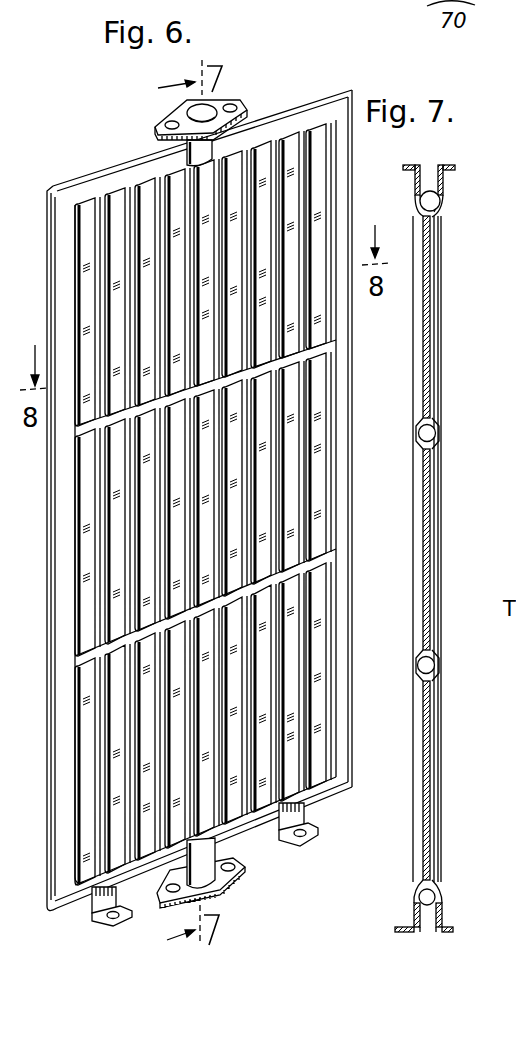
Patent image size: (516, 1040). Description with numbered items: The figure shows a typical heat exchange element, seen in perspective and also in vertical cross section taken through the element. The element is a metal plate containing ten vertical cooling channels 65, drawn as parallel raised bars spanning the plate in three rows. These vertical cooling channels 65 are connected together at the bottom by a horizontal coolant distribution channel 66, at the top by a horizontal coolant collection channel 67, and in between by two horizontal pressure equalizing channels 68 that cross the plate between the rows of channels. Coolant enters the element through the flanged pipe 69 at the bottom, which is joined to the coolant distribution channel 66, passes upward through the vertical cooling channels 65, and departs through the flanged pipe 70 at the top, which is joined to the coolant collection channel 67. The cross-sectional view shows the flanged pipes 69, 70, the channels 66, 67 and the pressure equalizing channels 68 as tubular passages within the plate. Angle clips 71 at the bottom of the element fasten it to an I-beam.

In FIG. 6, the vertical cooling channels 65 is at (132, 512).
In FIG. 6, the horizontal coolant distribution channel 66 is at (253, 813).
In FIG. 7, the horizontal coolant distribution channel 66 is at (434, 896).
In FIG. 6, the horizontal coolant collection channel 67 is at (113, 193).
In FIG. 7, the horizontal coolant collection channel 67 is at (436, 203).
In FIG. 6, the horizontal pressure equalizing channels 68 is at (80, 428).
In FIG. 7, the horizontal pressure equalizing channels 68 is at (434, 430).
In FIG. 6, the flanged pipe 69 is at (215, 877).
In FIG. 7, the flanged pipe 69 is at (442, 912).
In FIG. 6, the flanged pipe 70 is at (238, 99).
In FIG. 7, the flanged pipe 70 is at (446, 176).
In FIG. 6, the angle clips 71 is at (115, 923).